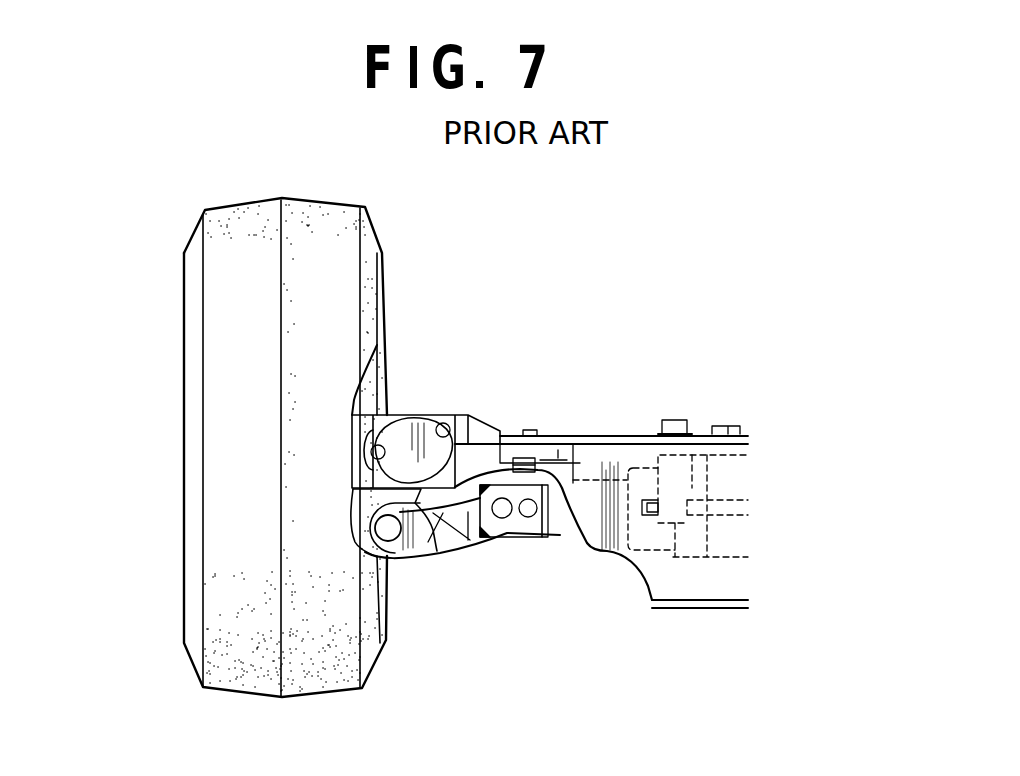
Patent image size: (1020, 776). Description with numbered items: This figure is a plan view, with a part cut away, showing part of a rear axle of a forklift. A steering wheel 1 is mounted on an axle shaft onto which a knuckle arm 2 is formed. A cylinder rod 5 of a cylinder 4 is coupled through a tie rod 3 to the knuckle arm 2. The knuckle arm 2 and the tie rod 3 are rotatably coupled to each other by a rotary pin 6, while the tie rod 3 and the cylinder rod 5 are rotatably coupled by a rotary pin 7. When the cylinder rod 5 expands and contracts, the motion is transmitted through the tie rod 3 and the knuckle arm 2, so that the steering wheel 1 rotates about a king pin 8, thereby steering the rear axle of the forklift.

The steering wheel 1 is at (380, 242).
The knuckle arm 2 is at (440, 550).
The tie rod 3 is at (465, 547).
The cylinder 4 is at (730, 560).
The cylinder rod 5 is at (567, 537).
The rotary pin 6 is at (402, 547).
The rotary pin 7 is at (512, 517).
The king pin 8 is at (455, 465).